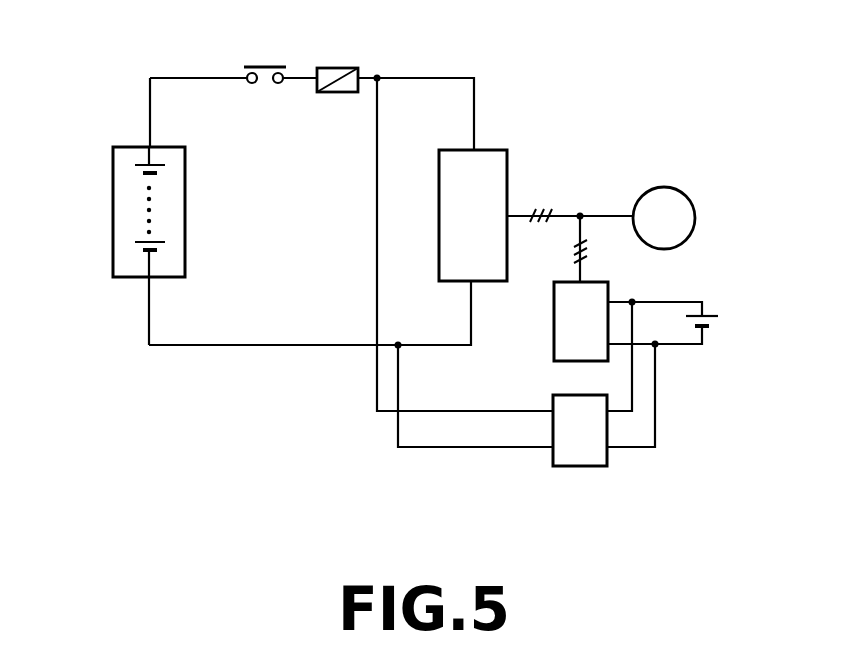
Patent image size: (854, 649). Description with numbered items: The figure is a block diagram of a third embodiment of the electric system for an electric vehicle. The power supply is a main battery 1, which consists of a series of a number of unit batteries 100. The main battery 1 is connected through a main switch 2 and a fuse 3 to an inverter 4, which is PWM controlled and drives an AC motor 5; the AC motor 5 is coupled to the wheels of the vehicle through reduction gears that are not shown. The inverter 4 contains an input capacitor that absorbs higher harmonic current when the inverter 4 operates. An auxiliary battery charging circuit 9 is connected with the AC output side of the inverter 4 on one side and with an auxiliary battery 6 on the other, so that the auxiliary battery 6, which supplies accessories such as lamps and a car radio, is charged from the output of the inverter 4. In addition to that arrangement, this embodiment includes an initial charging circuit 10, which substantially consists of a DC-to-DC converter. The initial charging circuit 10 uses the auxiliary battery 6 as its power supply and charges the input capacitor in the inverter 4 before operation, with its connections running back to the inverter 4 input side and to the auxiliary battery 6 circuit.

The main battery 1 is at (128, 147).
The unit batteries 100 is at (141, 170).
The main switch 2 is at (254, 62).
The fuse 3 is at (335, 68).
The inverter 4 is at (505, 150).
The AC motor 5 is at (681, 190).
The auxiliary battery 6 is at (712, 322).
The auxiliary battery charging circuit 9 is at (600, 282).
The initial charging circuit 10 is at (563, 466).